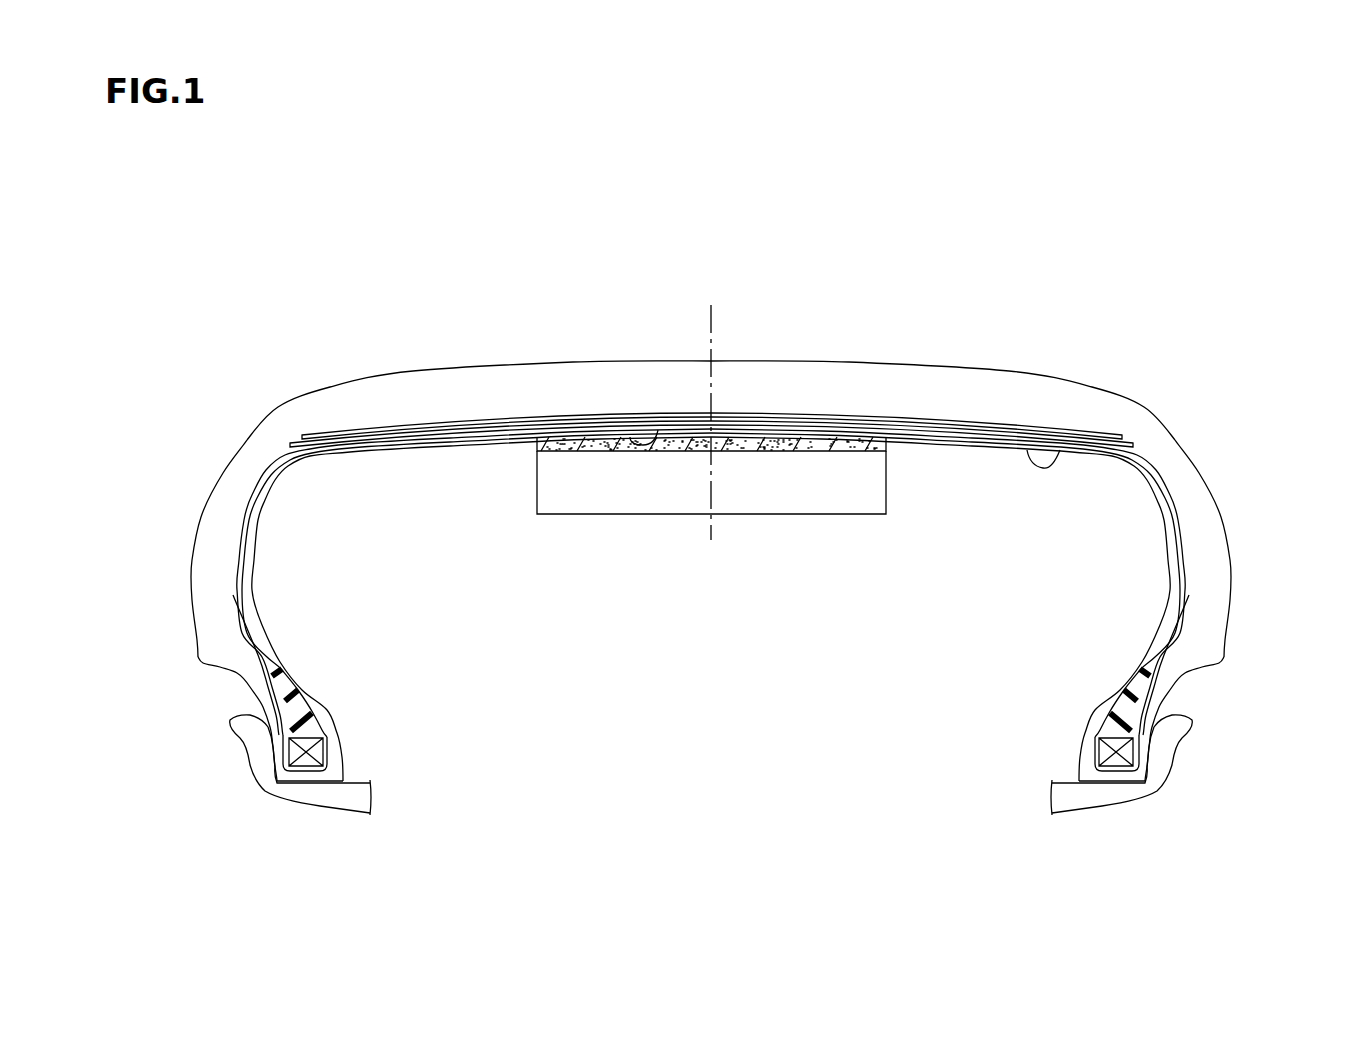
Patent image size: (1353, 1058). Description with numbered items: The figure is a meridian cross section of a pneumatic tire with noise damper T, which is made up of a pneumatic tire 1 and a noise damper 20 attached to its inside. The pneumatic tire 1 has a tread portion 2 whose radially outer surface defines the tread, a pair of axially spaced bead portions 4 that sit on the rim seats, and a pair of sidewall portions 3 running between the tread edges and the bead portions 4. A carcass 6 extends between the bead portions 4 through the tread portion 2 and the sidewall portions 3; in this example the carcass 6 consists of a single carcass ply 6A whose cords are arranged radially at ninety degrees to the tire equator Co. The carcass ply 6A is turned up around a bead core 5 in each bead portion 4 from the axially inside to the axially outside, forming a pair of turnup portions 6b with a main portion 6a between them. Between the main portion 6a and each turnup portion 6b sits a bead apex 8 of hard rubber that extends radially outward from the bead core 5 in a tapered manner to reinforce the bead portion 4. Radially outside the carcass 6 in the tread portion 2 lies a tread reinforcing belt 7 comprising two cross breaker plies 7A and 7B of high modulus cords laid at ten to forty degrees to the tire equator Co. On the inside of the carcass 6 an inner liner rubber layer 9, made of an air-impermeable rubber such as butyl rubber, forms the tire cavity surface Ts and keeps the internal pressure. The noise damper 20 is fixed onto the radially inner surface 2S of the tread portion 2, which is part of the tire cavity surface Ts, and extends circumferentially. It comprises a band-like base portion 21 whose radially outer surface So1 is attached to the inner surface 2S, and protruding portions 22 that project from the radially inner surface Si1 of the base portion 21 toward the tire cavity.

The pneumatic tire with noise damper T is at (362, 252).
The pneumatic tire 1 is at (478, 392).
The noise damper 20 is at (535, 493).
The base portion 21 is at (592, 440).
The protruding portions 22 is at (640, 515).
The tread portion 2 is at (786, 357).
The radially inner surface of the tread portion 2S is at (658, 430).
The radially outer surface of the base portion So1 is at (600, 432).
The radially inner surface of the base portion Si1 is at (760, 453).
The tire equator Co is at (711, 410).
The sidewall portions 3 is at (1215, 487).
The bead portions 4 is at (1090, 737).
The bead core 5 is at (1115, 760).
The carcass 6 is at (1037, 568).
The carcass ply 6A is at (711, 583).
The main portion 6a is at (1153, 665).
The turnup portions 6b is at (1123, 687).
The tread reinforcing belt 7 is at (1000, 252).
The breaker ply 7A is at (981, 430).
The breaker ply 7B is at (913, 418).
The bead apex 8 is at (1130, 700).
The inner liner rubber layer 9 is at (1140, 475).
The tire cavity surface Ts is at (1060, 450).